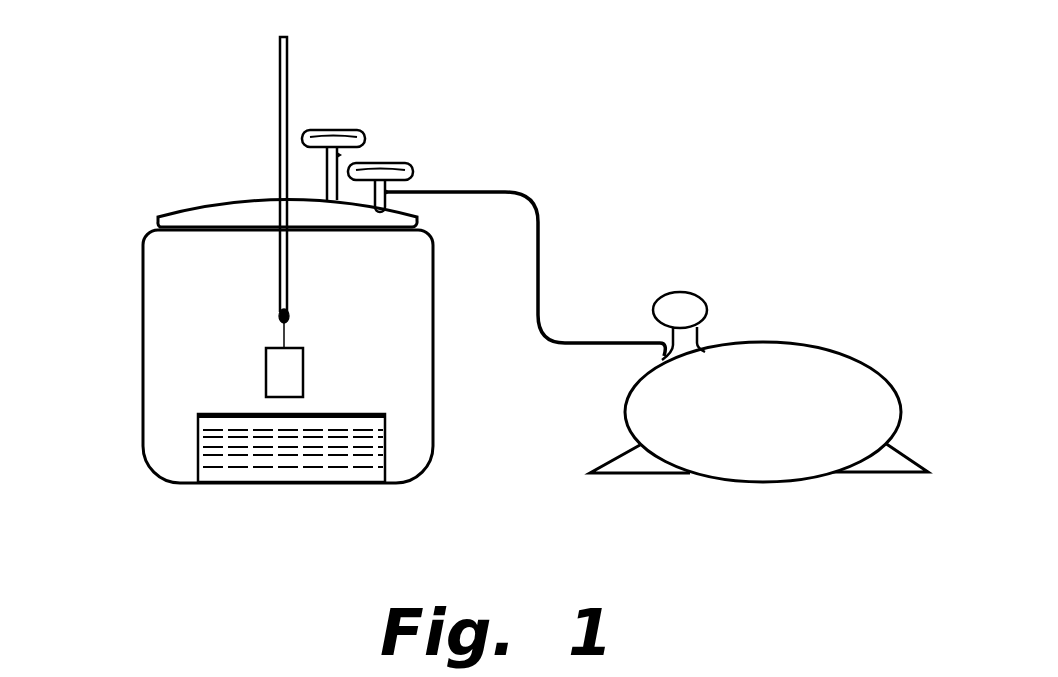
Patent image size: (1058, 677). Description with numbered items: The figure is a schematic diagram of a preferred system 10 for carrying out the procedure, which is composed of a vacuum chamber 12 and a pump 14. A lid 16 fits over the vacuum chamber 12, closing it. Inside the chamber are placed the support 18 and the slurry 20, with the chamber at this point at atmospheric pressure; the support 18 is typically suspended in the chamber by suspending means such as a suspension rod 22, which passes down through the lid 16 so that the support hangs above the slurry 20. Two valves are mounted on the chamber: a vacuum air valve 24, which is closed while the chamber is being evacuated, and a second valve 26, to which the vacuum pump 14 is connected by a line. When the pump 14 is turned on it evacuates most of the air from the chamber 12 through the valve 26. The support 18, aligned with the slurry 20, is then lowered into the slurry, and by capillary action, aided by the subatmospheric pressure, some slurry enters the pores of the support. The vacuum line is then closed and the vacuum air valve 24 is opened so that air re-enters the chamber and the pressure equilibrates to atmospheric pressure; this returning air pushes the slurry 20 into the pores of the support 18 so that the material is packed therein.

The system 10 is at (662, 78).
The vacuum chamber 12 is at (110, 360).
The pump 14 is at (778, 417).
The lid 16 is at (198, 210).
The support 18 is at (266, 370).
The slurry 20 is at (255, 462).
The suspension rod 22 is at (279, 58).
The vacuum air valve 24 is at (330, 130).
The valve 26 is at (378, 162).